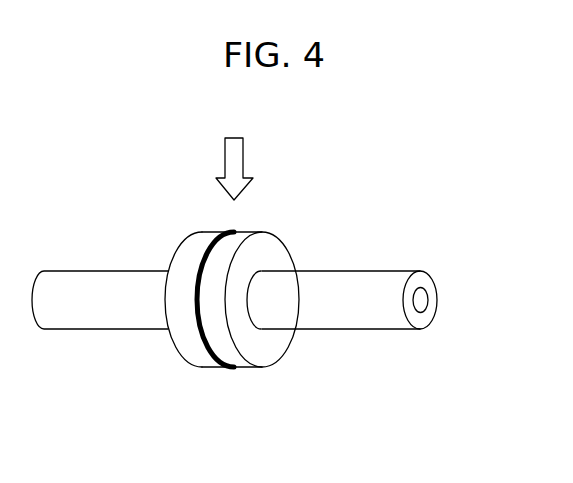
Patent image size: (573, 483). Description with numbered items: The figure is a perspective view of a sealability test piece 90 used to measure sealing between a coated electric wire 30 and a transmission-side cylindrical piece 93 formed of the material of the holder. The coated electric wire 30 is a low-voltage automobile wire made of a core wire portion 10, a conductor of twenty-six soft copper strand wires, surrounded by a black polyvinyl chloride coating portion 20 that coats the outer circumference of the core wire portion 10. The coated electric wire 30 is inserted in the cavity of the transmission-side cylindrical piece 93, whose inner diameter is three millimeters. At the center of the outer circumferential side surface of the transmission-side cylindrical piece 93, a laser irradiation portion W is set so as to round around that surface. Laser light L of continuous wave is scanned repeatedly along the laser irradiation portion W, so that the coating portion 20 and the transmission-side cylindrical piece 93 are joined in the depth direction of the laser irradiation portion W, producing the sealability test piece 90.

The core wire portion 10 is at (428, 297).
The coating portion 20 is at (83, 317).
The coated electric wire 30 is at (382, 265).
The laser irradiation portion W is at (204, 342).
The sealability test piece 90 is at (397, 165).
The transmission-side cylindrical piece 93 is at (244, 370).
The laser light L is at (243, 158).